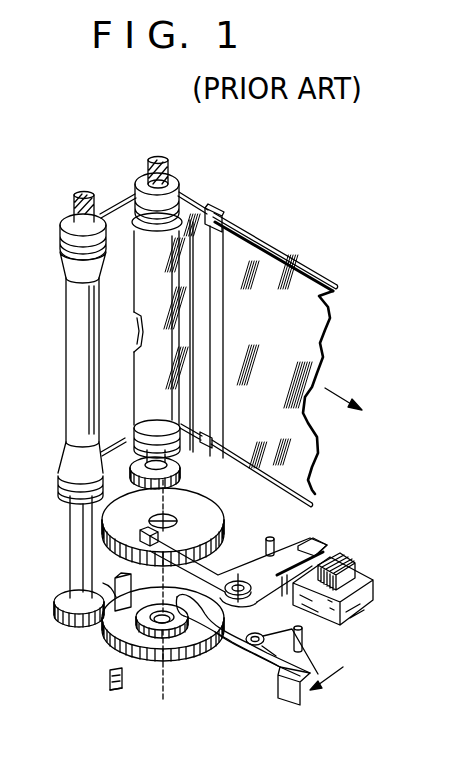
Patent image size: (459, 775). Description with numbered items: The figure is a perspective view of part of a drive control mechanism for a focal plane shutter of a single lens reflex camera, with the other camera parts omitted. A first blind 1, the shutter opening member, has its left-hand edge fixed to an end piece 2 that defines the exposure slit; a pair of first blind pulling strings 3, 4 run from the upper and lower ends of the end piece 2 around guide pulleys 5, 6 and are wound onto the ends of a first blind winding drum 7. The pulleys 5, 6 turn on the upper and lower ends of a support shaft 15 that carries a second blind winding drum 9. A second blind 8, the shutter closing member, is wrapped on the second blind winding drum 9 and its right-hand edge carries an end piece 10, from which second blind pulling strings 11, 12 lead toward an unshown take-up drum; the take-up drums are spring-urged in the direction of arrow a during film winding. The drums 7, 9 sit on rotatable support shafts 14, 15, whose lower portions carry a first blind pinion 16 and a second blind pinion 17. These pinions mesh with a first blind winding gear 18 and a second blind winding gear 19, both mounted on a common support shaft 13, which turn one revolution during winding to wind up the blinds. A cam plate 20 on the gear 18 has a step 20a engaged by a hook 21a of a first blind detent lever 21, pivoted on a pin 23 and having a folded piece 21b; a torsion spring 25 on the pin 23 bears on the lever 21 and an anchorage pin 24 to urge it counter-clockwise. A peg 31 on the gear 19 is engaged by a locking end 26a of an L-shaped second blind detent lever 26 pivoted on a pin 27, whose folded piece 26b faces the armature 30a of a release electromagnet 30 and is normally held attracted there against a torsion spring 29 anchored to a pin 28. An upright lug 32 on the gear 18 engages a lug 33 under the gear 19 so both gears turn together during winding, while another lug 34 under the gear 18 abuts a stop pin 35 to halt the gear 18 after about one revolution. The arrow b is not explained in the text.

The first blind 1 is at (283, 264).
The end piece 2 is at (230, 244).
The first blind pulling string 3 is at (116, 206).
The first blind pulling string 4 is at (116, 436).
The guide pulley 5 is at (176, 182).
The guide pulley 6 is at (135, 452).
The first blind winding drum 7 is at (66, 330).
The second blind 8 is at (188, 215).
The second blind winding drum 9 is at (134, 327).
The end piece 10 is at (214, 318).
The second blind pulling string 11 is at (303, 268).
The second blind pulling string 12 is at (312, 504).
The common support shaft 13 is at (163, 704).
The support shaft 14 is at (78, 206).
The support shaft 15 is at (155, 165).
The first blind pinion 16 is at (54, 604).
The second blind pinion 17 is at (183, 470).
The first blind winding gear 18 is at (166, 694).
The second blind winding gear 19 is at (196, 502).
The cam plate 20 is at (153, 663).
The step 20a is at (224, 648).
The first blind detent lever 21 is at (281, 679).
The hook 21a is at (199, 660).
The folded piece 21b is at (290, 702).
The pin 23 is at (265, 663).
The anchorage pin 24 is at (302, 638).
The torsion spring 25 is at (306, 666).
The second blind detent lever 26 is at (256, 635).
The locking end 26a is at (177, 522).
The folded piece 26b is at (300, 546).
The pin 27 is at (238, 576).
The anchorage pin 28 is at (269, 537).
The torsion spring 29 is at (262, 594).
The release electromagnet 30 is at (374, 581).
The armature 30a is at (340, 556).
The peg 31 is at (142, 530).
The upright lug 32 is at (103, 583).
The lug 33 is at (118, 577).
The lug 34 is at (114, 690).
The stop pin 35 is at (110, 673).
The arrow a is at (330, 388).
The direction arrow b is at (343, 668).